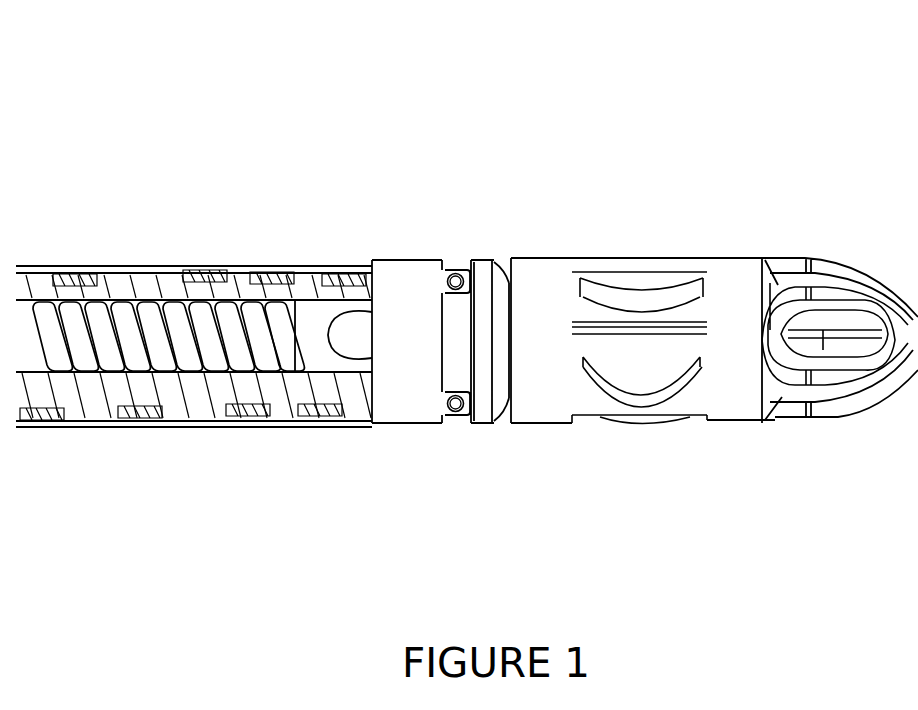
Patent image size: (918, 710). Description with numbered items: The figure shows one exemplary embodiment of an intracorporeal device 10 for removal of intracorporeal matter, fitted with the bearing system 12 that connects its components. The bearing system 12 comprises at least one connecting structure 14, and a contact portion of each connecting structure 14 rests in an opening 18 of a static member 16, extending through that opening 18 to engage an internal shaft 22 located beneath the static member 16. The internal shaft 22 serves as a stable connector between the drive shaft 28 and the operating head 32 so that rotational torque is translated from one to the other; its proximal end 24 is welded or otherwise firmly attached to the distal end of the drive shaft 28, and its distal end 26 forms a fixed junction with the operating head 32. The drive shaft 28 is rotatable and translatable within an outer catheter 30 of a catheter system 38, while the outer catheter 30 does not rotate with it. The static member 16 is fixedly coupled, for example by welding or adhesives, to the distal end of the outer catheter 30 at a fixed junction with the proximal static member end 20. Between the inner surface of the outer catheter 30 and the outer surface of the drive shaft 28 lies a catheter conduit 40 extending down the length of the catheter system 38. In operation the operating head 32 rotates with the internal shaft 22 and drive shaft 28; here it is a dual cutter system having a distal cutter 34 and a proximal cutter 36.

The intracorporeal device 10 is at (523, 110).
The bearing system 12 is at (415, 238).
The connecting structure 14 is at (457, 270).
The static member 16 is at (432, 393).
The opening 18 is at (466, 415).
The proximal static member end 20 is at (373, 423).
The internal shaft 22 is at (317, 268).
The proximal end of the internal shaft 24 is at (290, 302).
The distal end of the internal shaft 26 is at (572, 257).
The drive shaft 28 is at (182, 302).
The outer catheter 30 is at (265, 413).
The operating head 32 is at (697, 228).
The distal cutter 34 is at (838, 410).
The proximal cutter 36 is at (643, 417).
The catheter system 38 is at (100, 413).
The catheter conduit 40 is at (112, 283).